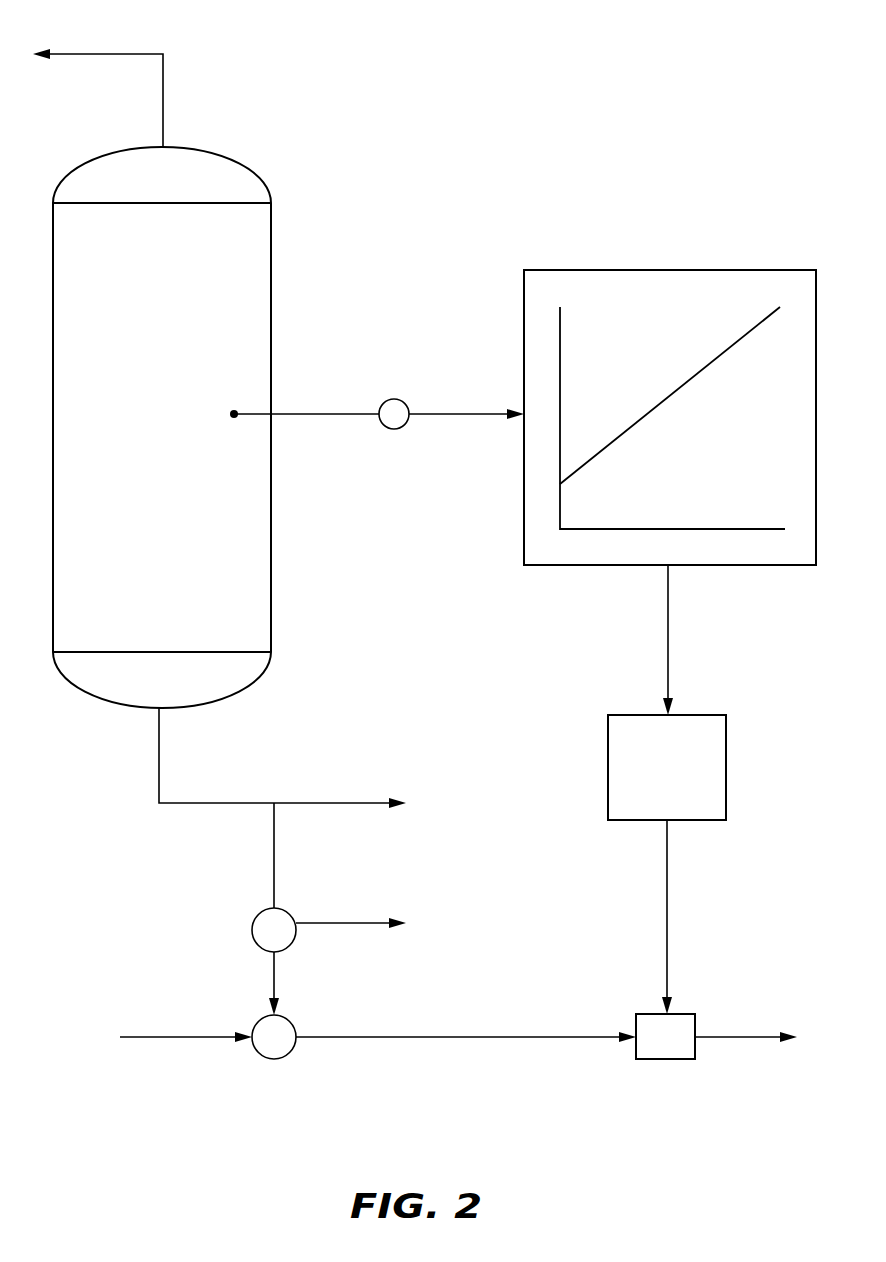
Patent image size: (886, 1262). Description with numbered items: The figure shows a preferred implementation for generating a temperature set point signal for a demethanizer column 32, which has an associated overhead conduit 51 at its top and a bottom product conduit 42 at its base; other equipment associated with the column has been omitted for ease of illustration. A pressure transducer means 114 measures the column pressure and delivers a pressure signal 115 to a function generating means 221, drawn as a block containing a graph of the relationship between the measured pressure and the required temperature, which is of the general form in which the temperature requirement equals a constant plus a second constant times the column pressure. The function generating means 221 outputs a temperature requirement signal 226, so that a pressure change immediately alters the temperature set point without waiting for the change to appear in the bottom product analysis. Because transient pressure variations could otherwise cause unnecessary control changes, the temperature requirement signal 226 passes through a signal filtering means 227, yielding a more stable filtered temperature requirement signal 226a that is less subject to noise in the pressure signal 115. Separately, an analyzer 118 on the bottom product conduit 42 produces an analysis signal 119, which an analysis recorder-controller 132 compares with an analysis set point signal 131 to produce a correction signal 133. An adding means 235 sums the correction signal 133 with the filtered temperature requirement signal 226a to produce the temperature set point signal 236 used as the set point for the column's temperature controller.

The demethanizer column 32 is at (272, 266).
The overhead conduit 51 is at (96, 54).
The bottom product conduit 42 is at (237, 803).
The pressure transducer means 114 is at (395, 399).
The pressure signal 115 is at (459, 414).
The function generating means 221 is at (678, 270).
The temperature requirement signal 226 is at (668, 636).
The signal filtering means 227 is at (727, 770).
The filtered temperature requirement signal 226a is at (667, 900).
The adding means 235 is at (663, 1060).
The temperature set point signal 236 is at (742, 1037).
The analyzer 118 is at (252, 930).
The analysis signal 119 is at (275, 977).
The analysis recorder-controller 132 is at (268, 1060).
The analysis set point signal 131 is at (148, 1037).
The correction signal 133 is at (466, 1037).